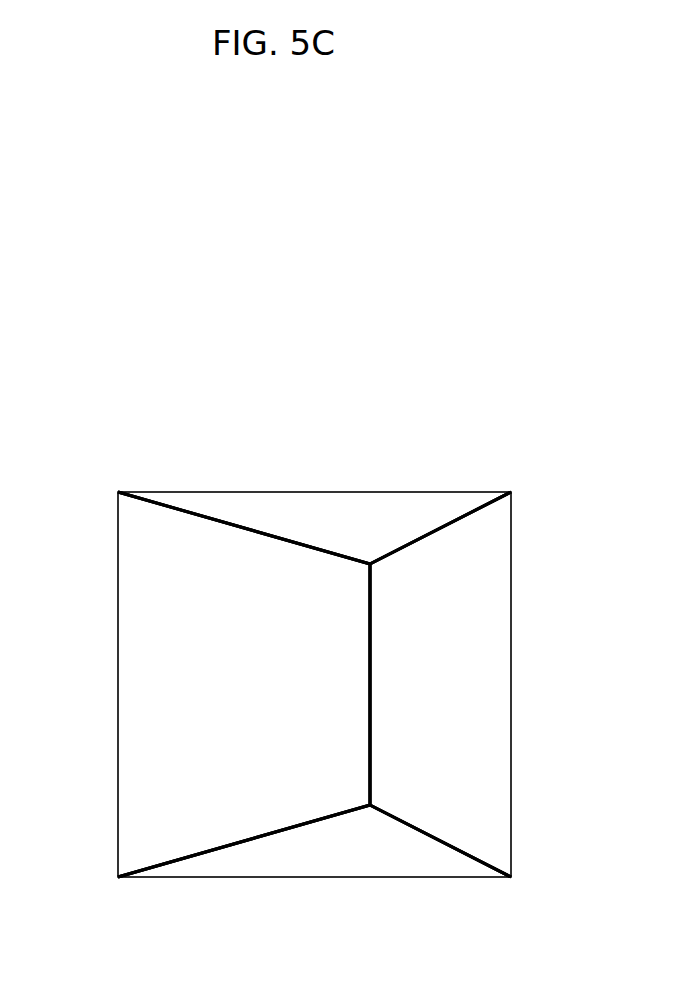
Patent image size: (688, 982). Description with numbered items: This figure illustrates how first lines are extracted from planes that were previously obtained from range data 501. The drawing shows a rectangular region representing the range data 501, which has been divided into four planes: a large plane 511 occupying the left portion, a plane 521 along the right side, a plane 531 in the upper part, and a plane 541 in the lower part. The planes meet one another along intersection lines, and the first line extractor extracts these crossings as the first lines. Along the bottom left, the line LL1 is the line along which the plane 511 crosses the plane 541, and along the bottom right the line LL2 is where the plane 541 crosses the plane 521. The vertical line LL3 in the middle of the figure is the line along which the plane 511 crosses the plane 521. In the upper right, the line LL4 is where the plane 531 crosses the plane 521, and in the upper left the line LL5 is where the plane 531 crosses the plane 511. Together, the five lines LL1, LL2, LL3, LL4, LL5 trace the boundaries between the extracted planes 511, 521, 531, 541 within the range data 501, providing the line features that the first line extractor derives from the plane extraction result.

The range data 501 is at (118, 682).
The plane 511 is at (244, 684).
The plane 521 is at (440, 684).
The plane 531 is at (314, 528).
The plane 541 is at (314, 841).
The line LL1 is at (202, 853).
The line LL2 is at (458, 851).
The line LL3 is at (370, 757).
The line LL4 is at (455, 520).
The line LL5 is at (237, 527).